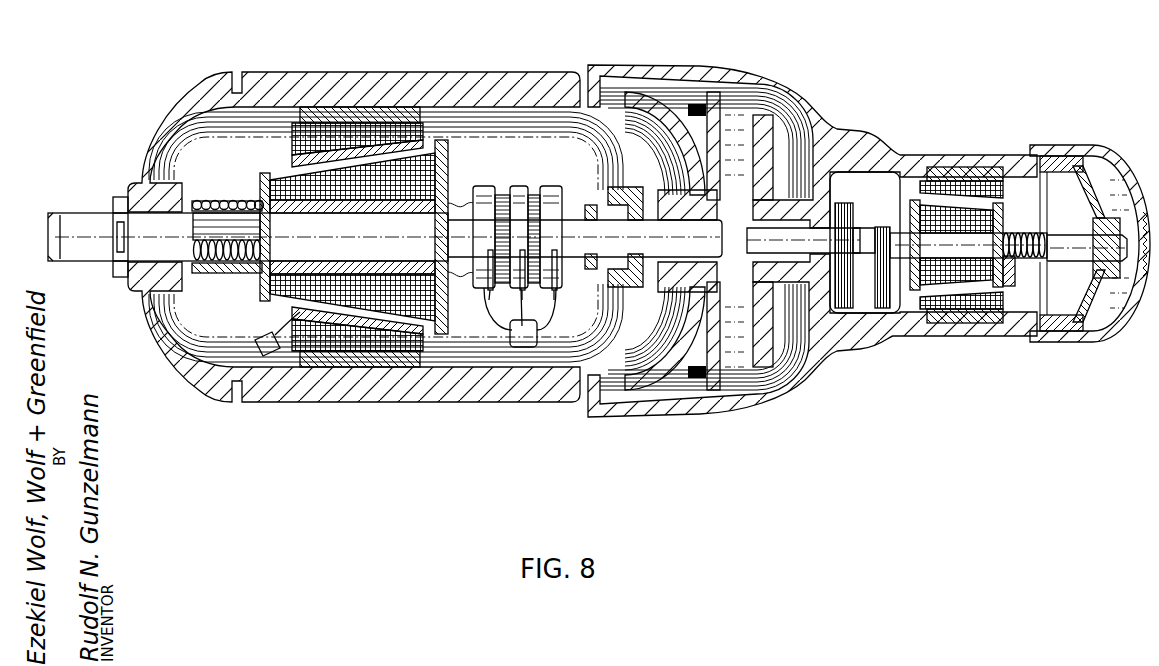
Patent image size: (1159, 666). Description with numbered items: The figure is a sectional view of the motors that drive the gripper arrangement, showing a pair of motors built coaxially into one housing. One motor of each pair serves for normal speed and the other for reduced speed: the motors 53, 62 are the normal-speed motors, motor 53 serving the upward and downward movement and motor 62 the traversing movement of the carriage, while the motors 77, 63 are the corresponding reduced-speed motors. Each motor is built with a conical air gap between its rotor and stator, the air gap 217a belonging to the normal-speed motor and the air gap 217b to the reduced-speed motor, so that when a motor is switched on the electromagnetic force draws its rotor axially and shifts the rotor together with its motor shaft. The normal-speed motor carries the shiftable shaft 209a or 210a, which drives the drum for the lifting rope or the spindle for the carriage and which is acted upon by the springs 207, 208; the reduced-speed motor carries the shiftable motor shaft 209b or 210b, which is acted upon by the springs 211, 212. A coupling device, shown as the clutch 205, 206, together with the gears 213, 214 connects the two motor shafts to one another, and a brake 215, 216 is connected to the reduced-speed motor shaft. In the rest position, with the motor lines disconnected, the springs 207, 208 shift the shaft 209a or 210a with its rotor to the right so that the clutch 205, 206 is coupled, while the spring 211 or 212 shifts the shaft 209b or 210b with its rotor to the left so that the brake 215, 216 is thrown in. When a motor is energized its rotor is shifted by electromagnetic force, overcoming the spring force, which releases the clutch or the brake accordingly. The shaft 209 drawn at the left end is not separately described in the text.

The motor 53 is at (575, 221).
The motor 62 is at (290, 108).
The clutch 205 is at (697, 209).
The clutch 206 is at (682, 100).
The shiftable shaft 209a is at (411, 243).
The shiftable shaft 210a is at (435, 237).
The shiftable motor shaft 209b is at (951, 190).
The shiftable motor shaft 210b is at (903, 240).
The motor 77 is at (961, 218).
The motor 63 is at (953, 181).
The brake 215 is at (1094, 228).
The brake 216 is at (1080, 160).
The main shaft 209 is at (80, 245).
The spring 207 is at (221, 262).
The spring 208 is at (233, 255).
The conical air gap 217a is at (383, 330).
The gear 213 is at (863, 286).
The gear 214 is at (873, 318).
The conical air gap 217b is at (957, 308).
The spring 211 is at (1065, 302).
The spring 212 is at (1032, 262).